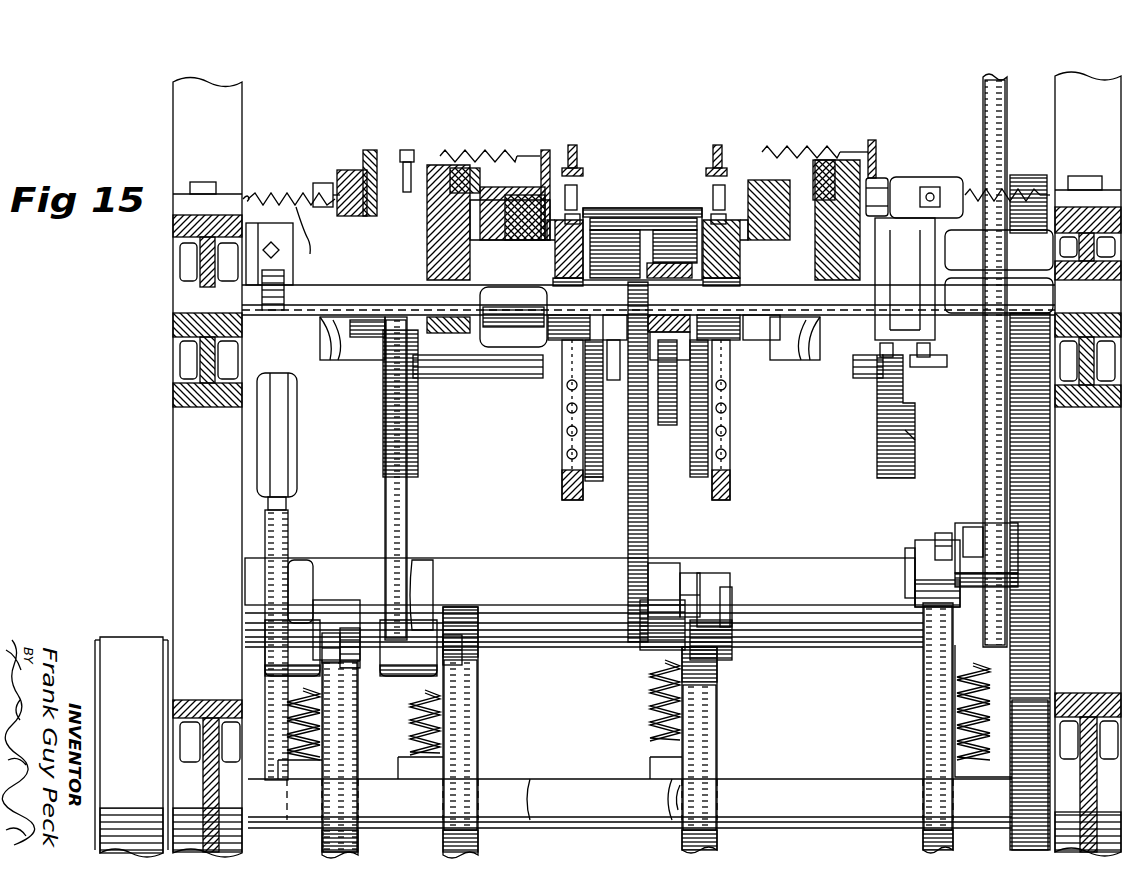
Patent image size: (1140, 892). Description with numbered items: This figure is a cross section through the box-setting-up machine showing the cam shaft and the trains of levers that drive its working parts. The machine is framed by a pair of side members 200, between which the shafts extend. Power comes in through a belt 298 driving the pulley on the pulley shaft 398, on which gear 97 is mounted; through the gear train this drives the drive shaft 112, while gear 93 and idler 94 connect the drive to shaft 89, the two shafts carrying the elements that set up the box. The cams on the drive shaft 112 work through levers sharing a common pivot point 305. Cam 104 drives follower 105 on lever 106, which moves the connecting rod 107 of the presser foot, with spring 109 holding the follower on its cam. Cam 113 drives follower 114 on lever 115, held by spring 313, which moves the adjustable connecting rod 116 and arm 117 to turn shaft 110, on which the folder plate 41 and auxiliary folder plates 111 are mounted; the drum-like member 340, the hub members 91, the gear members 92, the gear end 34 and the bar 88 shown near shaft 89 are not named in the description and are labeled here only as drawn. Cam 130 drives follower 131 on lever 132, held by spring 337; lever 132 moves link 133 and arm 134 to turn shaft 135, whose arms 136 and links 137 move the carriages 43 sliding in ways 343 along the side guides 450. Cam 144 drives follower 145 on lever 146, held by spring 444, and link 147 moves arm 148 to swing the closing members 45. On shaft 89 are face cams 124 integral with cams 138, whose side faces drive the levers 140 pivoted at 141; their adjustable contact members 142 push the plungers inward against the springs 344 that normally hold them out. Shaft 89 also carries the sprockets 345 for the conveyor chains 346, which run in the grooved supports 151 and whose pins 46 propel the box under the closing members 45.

The side members 200 is at (195, 352).
The belt 298 is at (122, 645).
The arm 117 is at (245, 240).
The shaft 110 is at (303, 208).
The levers 140 is at (324, 180).
The arm 148 is at (368, 166).
The adjustable contact members 142 is at (405, 147).
The arms 136 is at (444, 169).
The links 137 is at (452, 163).
The springs 344 is at (457, 154).
The carriages 43 is at (494, 184).
The ways 343 is at (515, 193).
The side guides 450 is at (546, 150).
The closing members 45 is at (577, 149).
The pins 46 is at (577, 188).
The conveyor chains 346 is at (576, 216).
The grooved supports 151 is at (555, 243).
The folder plate 41 is at (616, 214).
The drum shell 340 is at (670, 218).
The auxiliary folder plates 111 is at (563, 281).
The arm 134 is at (671, 315).
The shaft 89 is at (472, 378).
The collar 91 is at (355, 348).
The shaft 135 is at (340, 362).
The pivot 141 is at (925, 255).
The connecting rod 107 is at (983, 105).
The gear 93 is at (1028, 175).
The idler 94 is at (1050, 468).
The gear 97 is at (1012, 792).
The common pivot point 305 is at (783, 652).
The drive shaft 112 is at (577, 790).
The pulley shaft 398 is at (812, 785).
The connecting rod 116 is at (282, 525).
The lever 115 is at (304, 570).
The follower 114 is at (340, 600).
The spring 313 is at (281, 728).
The cam 113 is at (350, 712).
The link 147 is at (400, 506).
The face cams 124 is at (418, 441).
The cams 138 is at (383, 461).
The lever 146 is at (420, 596).
The follower 145 is at (460, 666).
The spring 444 is at (410, 740).
The cam 144 is at (479, 710).
The sprockets 345 is at (562, 443).
The gear 92 is at (602, 445).
The gear end 34 is at (594, 477).
The bar 88 is at (667, 425).
The link 133 is at (628, 516).
The lever 132 is at (660, 568).
The follower 131 is at (715, 583).
The spring 337 is at (652, 690).
The cam 130 is at (718, 716).
The follower 105 is at (928, 540).
The lever 106 is at (968, 523).
The cam 104 is at (923, 672).
The spring 109 is at (957, 700).